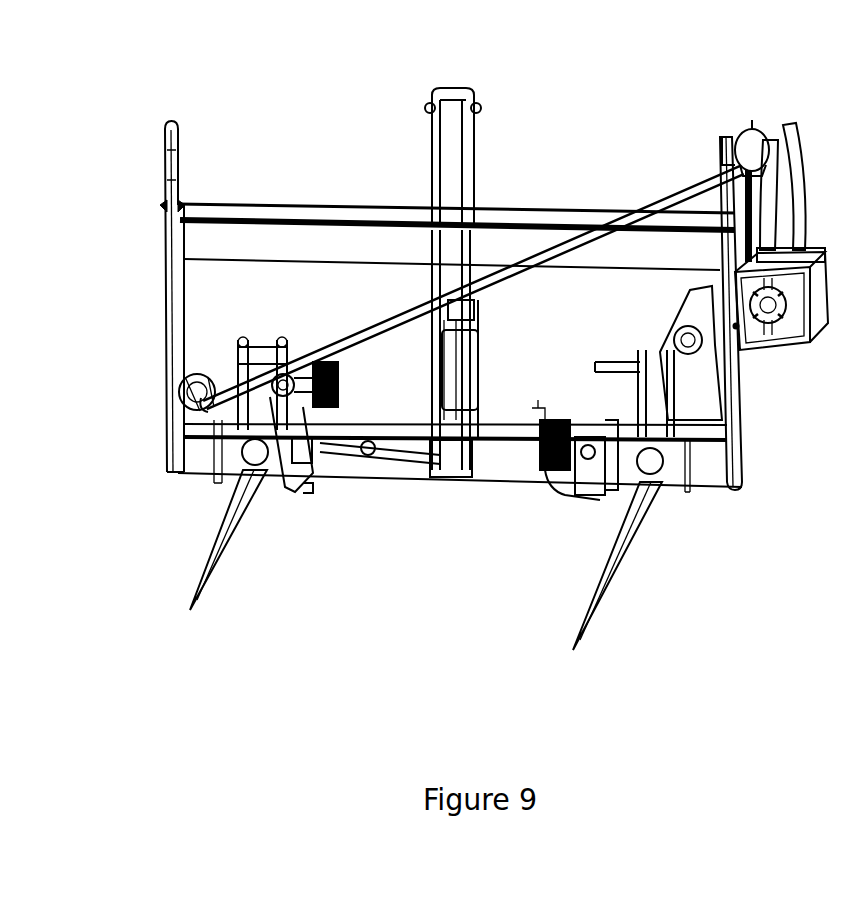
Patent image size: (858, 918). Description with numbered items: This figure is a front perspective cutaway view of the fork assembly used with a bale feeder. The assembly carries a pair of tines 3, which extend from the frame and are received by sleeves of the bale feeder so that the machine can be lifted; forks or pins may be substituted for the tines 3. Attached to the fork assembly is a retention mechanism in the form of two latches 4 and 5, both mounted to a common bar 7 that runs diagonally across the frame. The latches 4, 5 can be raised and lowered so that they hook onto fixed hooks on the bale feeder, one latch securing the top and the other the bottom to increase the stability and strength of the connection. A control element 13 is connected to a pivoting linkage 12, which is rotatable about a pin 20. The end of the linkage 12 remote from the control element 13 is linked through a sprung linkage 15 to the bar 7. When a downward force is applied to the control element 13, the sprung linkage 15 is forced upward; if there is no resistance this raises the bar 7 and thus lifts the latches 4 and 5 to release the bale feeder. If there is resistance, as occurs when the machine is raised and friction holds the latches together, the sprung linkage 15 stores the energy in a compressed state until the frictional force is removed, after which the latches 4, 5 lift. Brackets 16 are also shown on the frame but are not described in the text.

The tines 3 is at (220, 560).
The latch 4 is at (757, 132).
The latch 5 is at (190, 380).
The bar 7 is at (660, 195).
The pivoting linkage 12 is at (400, 458).
The control element 13 is at (315, 470).
The sprung linkage 15 is at (480, 368).
The bracket 16 is at (448, 100).
The pin 20 is at (368, 456).